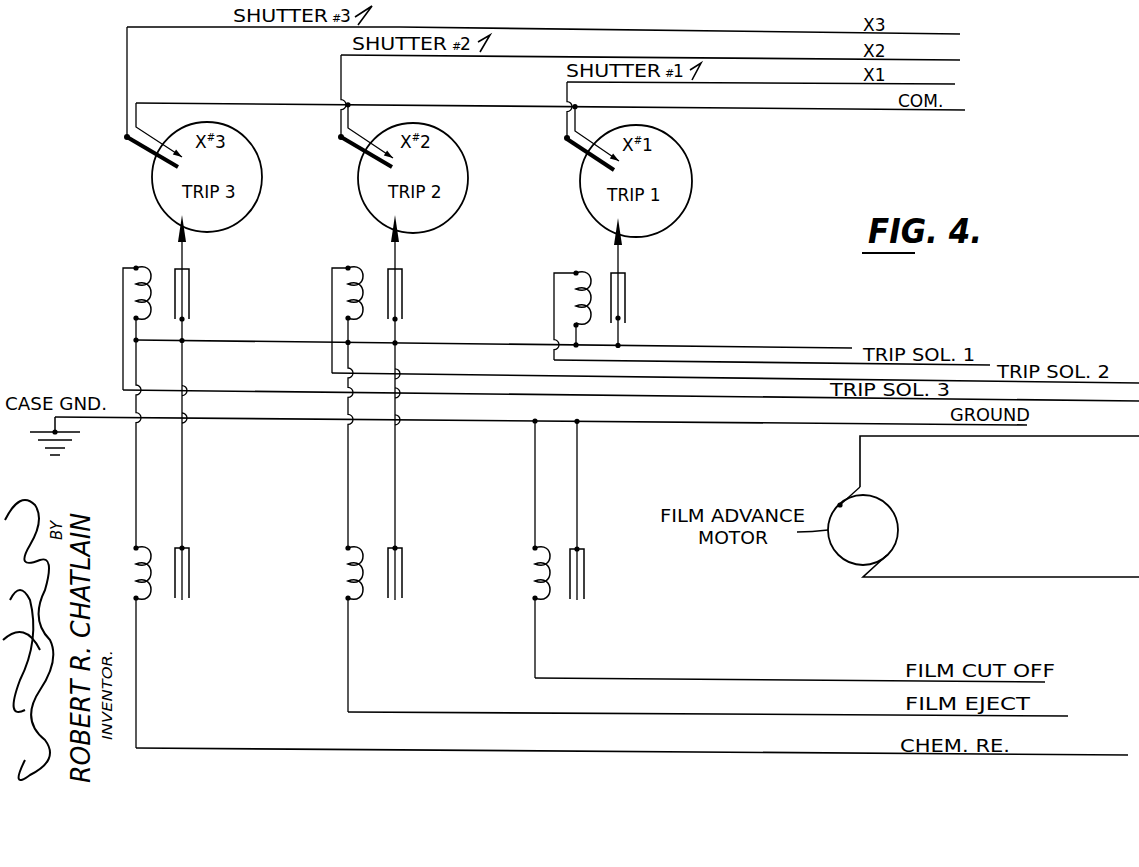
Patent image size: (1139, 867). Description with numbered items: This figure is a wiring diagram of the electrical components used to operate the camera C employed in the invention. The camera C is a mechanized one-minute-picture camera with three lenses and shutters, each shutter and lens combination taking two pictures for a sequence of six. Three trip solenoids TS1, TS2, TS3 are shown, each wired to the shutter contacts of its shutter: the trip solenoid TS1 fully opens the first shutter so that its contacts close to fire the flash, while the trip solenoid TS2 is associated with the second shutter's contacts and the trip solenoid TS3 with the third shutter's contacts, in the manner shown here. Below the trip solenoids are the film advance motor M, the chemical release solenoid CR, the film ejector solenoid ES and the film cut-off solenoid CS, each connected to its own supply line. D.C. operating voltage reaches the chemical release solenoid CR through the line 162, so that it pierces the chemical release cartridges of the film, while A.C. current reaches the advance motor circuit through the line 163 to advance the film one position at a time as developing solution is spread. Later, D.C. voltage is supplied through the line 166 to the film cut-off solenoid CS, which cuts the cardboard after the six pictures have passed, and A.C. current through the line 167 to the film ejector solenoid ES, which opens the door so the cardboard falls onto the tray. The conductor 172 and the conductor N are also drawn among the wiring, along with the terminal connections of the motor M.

The line 162 is at (399, 751).
The line 163 is at (1072, 438).
The line 166 is at (639, 677).
The line 167 is at (513, 710).
The trip solenoid 1 conductor 172 is at (633, 361).
The neutral conductor N is at (817, 350).
The camera C is at (1060, 579).
The film advance motor M is at (896, 540).
The chemical release solenoid CR is at (141, 606).
The film ejector solenoid ES is at (338, 589).
The film cut-off solenoid CS is at (529, 590).
The trip solenoid TS1 is at (578, 272).
The trip solenoid TS2 is at (353, 266).
The trip solenoid TS3 is at (138, 265).